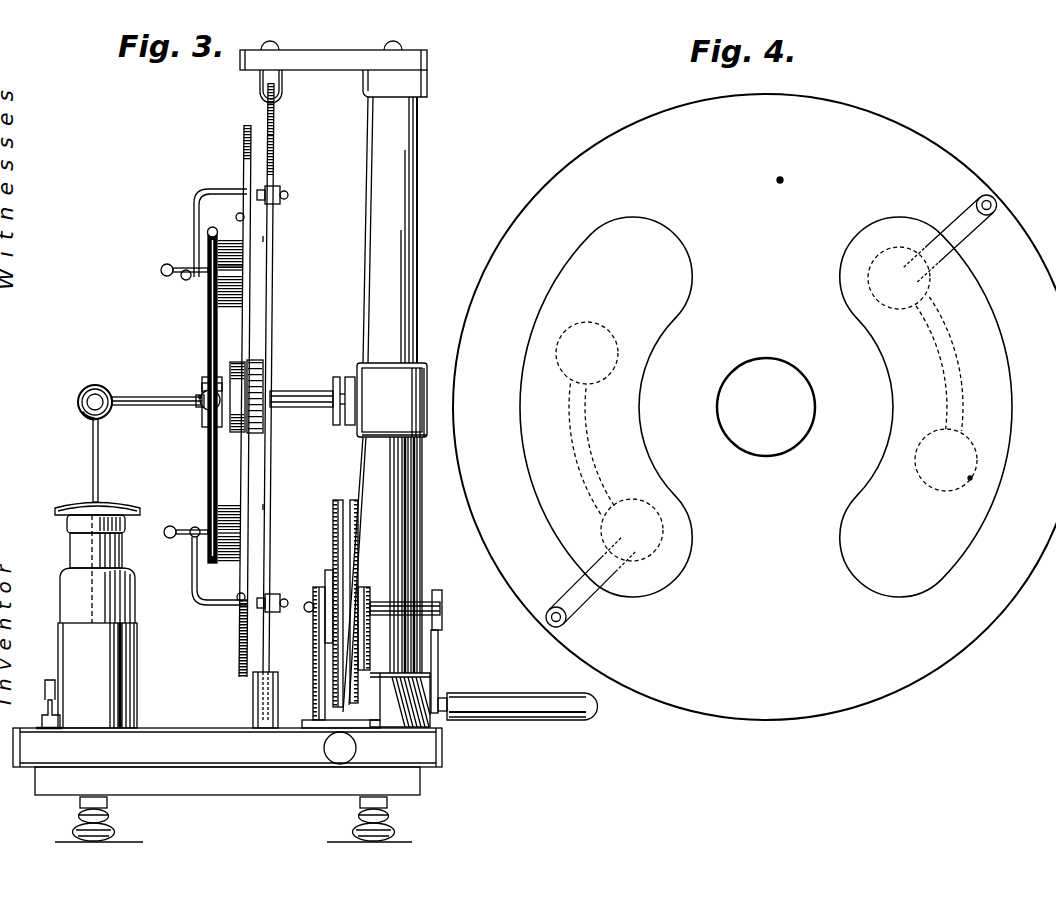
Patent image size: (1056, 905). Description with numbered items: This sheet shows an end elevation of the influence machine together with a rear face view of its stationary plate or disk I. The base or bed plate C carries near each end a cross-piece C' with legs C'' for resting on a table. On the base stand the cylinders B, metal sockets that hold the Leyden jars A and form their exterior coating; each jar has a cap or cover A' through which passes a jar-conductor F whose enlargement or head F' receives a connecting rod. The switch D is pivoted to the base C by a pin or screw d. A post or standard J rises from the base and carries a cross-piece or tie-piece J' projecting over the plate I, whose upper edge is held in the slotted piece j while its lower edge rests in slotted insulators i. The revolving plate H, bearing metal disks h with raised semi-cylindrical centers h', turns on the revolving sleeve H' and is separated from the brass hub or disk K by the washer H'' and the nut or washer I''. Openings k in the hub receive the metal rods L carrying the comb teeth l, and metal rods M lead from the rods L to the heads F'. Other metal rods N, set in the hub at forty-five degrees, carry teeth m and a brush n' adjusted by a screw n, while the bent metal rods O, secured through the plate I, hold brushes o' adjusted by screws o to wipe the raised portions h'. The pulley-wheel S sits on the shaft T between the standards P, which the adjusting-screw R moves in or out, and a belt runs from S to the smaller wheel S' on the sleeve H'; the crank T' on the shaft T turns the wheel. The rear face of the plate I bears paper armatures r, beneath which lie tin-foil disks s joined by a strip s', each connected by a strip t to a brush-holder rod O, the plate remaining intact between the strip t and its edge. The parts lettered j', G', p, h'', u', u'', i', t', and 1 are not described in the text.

In FIG. 3, the cross-piece J' is at (333, 55).
In FIG. 3, the slotted piece j is at (277, 87).
In FIG. 3, the hanger pin j' is at (252, 109).
In FIG. 3, the stationary disk or plate I is at (268, 377).
In FIG. 3, the revolving disk or plate H is at (232, 401).
In FIG. 3, the post or standard J is at (386, 398).
In FIG. 3, the smaller wheel S' is at (382, 396).
In FIG. 3, the revolving sleeve H' is at (312, 398).
In FIG. 3, the teeth l is at (237, 397).
In FIG. 3, the hub or disk K is at (201, 424).
In FIG. 3, the nut or washer I'' is at (197, 367).
In FIG. 3, the metal rods L is at (210, 400).
In FIG. 3, the metal rods M is at (157, 394).
In FIG. 3, the washer H'' is at (185, 389).
In FIG. 3, the openings k is at (192, 393).
In FIG. 3, the enlargements or heads F' is at (88, 398).
In FIG. 3, the hub G' is at (76, 409).
In FIG. 3, the jar-conductors F is at (105, 460).
In FIG. 3, the cap or cover A' is at (98, 499).
In FIG. 3, the Leyden jars A is at (103, 569).
In FIG. 3, the cylinders B is at (97, 675).
In FIG. 3, the switch D is at (46, 688).
In FIG. 3, the foot piece p is at (41, 714).
In FIG. 3, the pin or screw d is at (49, 740).
In FIG. 3, the base or bed plate C is at (227, 747).
In FIG. 3, the adjusting-screw R is at (340, 748).
In FIG. 3, the cross-piece C' is at (227, 781).
In FIG. 3, the legs C'' is at (237, 819).
In FIG. 3, the metal rods O is at (212, 397).
In FIG. 3, the metal rods N is at (209, 320).
In FIG. 3, the metal disks h is at (231, 401).
In FIG. 3, the raised centers h' is at (230, 401).
In FIG. 3, the brush fitting h'' is at (231, 403).
In FIG. 3, the screw o is at (172, 403).
In FIG. 3, the brush o' is at (231, 385).
In FIG. 3, the screw n is at (186, 403).
In FIG. 3, the brush n' is at (256, 272).
In FIG. 3, the teeth m is at (264, 240).
In FIG. 3, the clamp u' is at (266, 392).
In FIG. 3, the clamp screw u'' is at (296, 397).
In FIG. 3, the pulley-wheel S is at (341, 614).
In FIG. 3, the standards P is at (311, 653).
In FIG. 3, the shaft T is at (410, 639).
In FIG. 3, the crank T' is at (518, 685).
In FIG. 3, the insulators i is at (269, 700).
In FIG. 3, the inner rod i' is at (249, 696).
In FIG. 4, the disk 1 is at (754, 407).
In FIG. 4, the paper armatures r is at (766, 407).
In FIG. 4, the disks s is at (766, 404).
In FIG. 4, the strip s' is at (773, 406).
In FIG. 4, the strip t is at (771, 411).
In FIG. 4, the ring t' is at (765, 403).